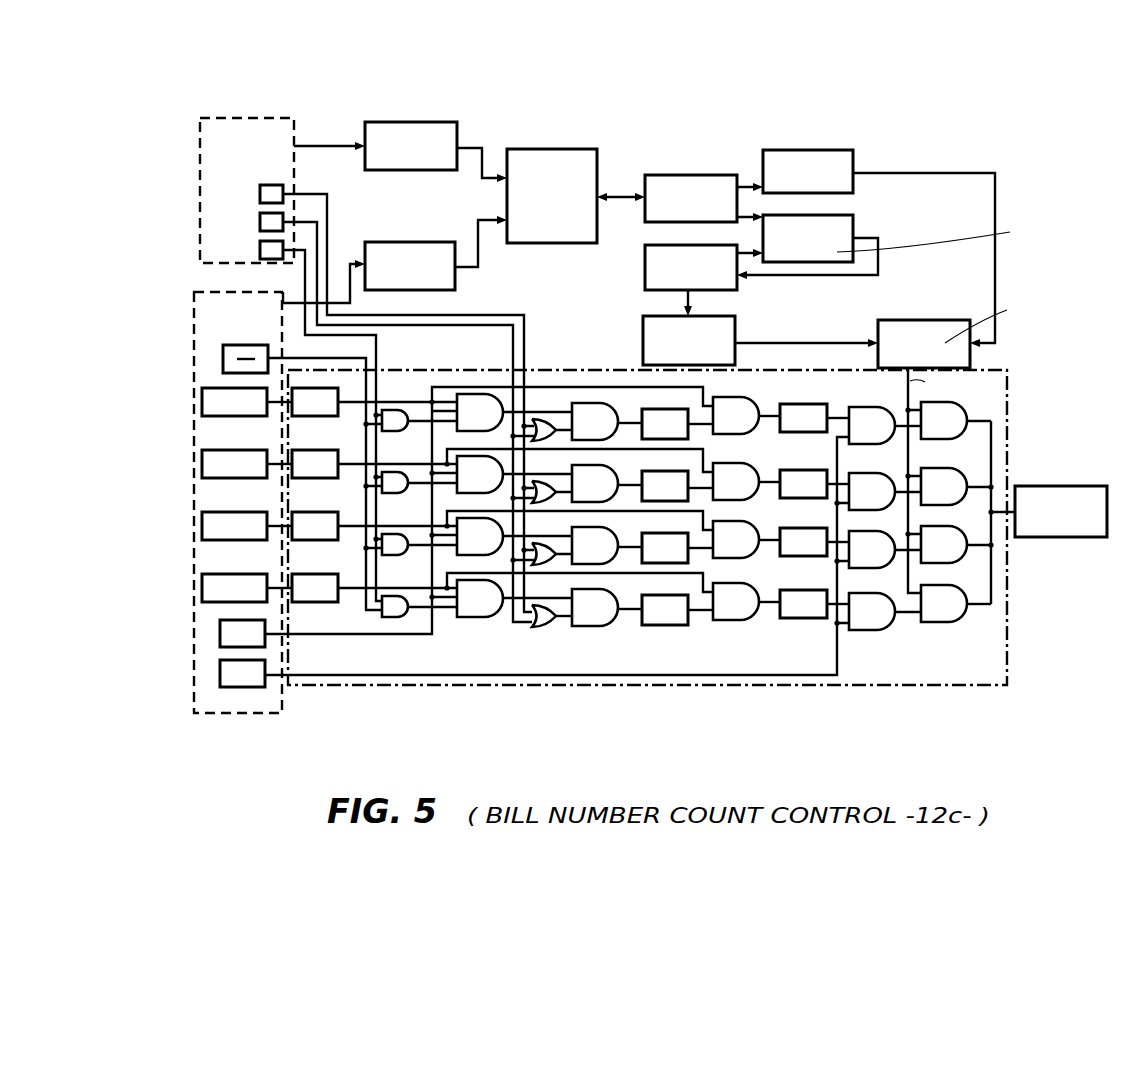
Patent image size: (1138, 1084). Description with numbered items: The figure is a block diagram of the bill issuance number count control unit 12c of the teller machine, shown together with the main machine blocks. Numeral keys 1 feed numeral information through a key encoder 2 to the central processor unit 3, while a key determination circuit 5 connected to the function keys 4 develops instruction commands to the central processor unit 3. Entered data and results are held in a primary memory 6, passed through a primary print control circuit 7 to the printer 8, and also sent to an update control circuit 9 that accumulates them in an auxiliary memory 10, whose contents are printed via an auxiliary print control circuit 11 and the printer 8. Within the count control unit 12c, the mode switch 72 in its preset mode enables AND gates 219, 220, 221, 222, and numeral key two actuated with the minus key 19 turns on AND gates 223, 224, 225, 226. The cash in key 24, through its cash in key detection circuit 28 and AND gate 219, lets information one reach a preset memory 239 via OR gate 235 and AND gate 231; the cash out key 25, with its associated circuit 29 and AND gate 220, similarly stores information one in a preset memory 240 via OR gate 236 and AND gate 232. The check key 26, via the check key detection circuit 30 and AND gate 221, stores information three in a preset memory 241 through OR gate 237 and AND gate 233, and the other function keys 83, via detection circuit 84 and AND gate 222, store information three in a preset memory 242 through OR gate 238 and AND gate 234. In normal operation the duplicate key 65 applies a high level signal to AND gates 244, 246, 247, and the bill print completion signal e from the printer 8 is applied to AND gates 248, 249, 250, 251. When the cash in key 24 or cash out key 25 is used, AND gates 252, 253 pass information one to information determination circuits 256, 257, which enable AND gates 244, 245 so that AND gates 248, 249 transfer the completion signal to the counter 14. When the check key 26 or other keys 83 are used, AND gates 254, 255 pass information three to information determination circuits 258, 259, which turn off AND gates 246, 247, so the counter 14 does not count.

The numeral keys 1 is at (273, 145).
The key encoder 2 is at (435, 148).
The central processor unit 3 is at (547, 173).
The function keys 4 is at (265, 705).
The key determination circuit 5 is at (410, 263).
The primary memory 6 is at (683, 198).
The primary print control circuit 7 is at (803, 170).
The printer 8 is at (928, 338).
The update control circuit 9 is at (827, 242).
The auxiliary memory 10 is at (643, 273).
The auxiliary print control circuit 11 is at (703, 342).
The bill issuance number count control unit 12c is at (486, 698).
The counter 14 is at (1052, 508).
The minus key 19 is at (223, 350).
The cash in key 24 is at (202, 404).
The cash out key 25 is at (215, 464).
The check key 26 is at (215, 524).
The cash in key detection circuit 28 is at (318, 398).
The detector 29 is at (318, 460).
The check key detection circuit 30 is at (318, 522).
The duplicate key 65 is at (225, 673).
The mode switch 72 is at (215, 633).
The other function keys 83 is at (200, 583).
The detection circuit 84 is at (318, 584).
The AND gate 219 is at (480, 410).
The AND gate 220 is at (482, 478).
The AND gate 221 is at (480, 540).
The AND gate 222 is at (483, 612).
The AND gate 223 is at (408, 401).
The AND gate 224 is at (408, 463).
The AND gate 225 is at (408, 525).
The AND gate 226 is at (408, 587).
The AND gate 231 is at (598, 418).
The AND gate 232 is at (600, 494).
The AND gate 233 is at (620, 537).
The AND gate 234 is at (620, 599).
The OR gate 235 is at (545, 424).
The OR gate 236 is at (545, 486).
The OR gate 237 is at (545, 548).
The OR gate 238 is at (545, 610).
The preset memory 239 is at (672, 409).
The preset memory 240 is at (672, 474).
The preset memory 241 is at (672, 537).
The preset memory 242 is at (672, 599).
The AND gate 244 is at (870, 420).
The AND gate 245 is at (870, 488).
The AND gate 246 is at (874, 546).
The AND gate 247 is at (870, 610).
The AND gate 248 is at (955, 422).
The AND gate 249 is at (972, 464).
The AND gate 250 is at (972, 529).
The AND gate 251 is at (965, 586).
The AND gate 252 is at (738, 414).
The AND gate 253 is at (738, 484).
The AND gate 254 is at (760, 524).
The AND gate 255 is at (740, 602).
The information determination circuit 256 is at (818, 395).
The information determination circuit 257 is at (806, 484).
The information determination circuit 258 is at (806, 544).
The information determination circuit 259 is at (802, 604).